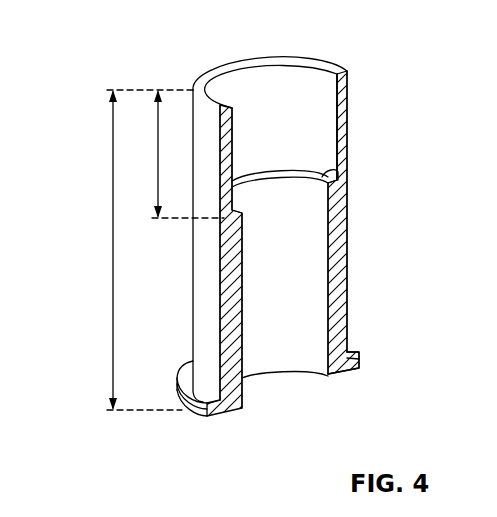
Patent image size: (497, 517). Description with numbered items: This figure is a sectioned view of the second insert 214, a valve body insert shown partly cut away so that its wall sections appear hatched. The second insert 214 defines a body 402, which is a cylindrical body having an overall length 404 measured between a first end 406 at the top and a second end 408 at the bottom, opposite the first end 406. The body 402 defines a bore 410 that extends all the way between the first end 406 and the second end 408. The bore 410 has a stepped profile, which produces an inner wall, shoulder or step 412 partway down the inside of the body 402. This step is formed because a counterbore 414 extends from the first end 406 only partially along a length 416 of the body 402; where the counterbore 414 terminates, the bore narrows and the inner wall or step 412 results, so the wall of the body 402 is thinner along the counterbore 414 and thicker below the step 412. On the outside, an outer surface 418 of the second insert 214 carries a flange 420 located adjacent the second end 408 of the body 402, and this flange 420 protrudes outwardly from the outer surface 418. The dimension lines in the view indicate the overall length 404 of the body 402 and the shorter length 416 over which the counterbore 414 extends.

The second insert 214 is at (121, 72).
The body 402 is at (348, 210).
The overall length 404 is at (113, 232).
The first end 406 is at (331, 63).
The second end 408 is at (343, 373).
The bore 410 is at (287, 78).
The inner wall, shoulder or step 412 is at (334, 168).
The counterbore 414 is at (328, 108).
The length 416 is at (158, 165).
The outer surface 418 is at (204, 290).
The flange 420 is at (180, 367).